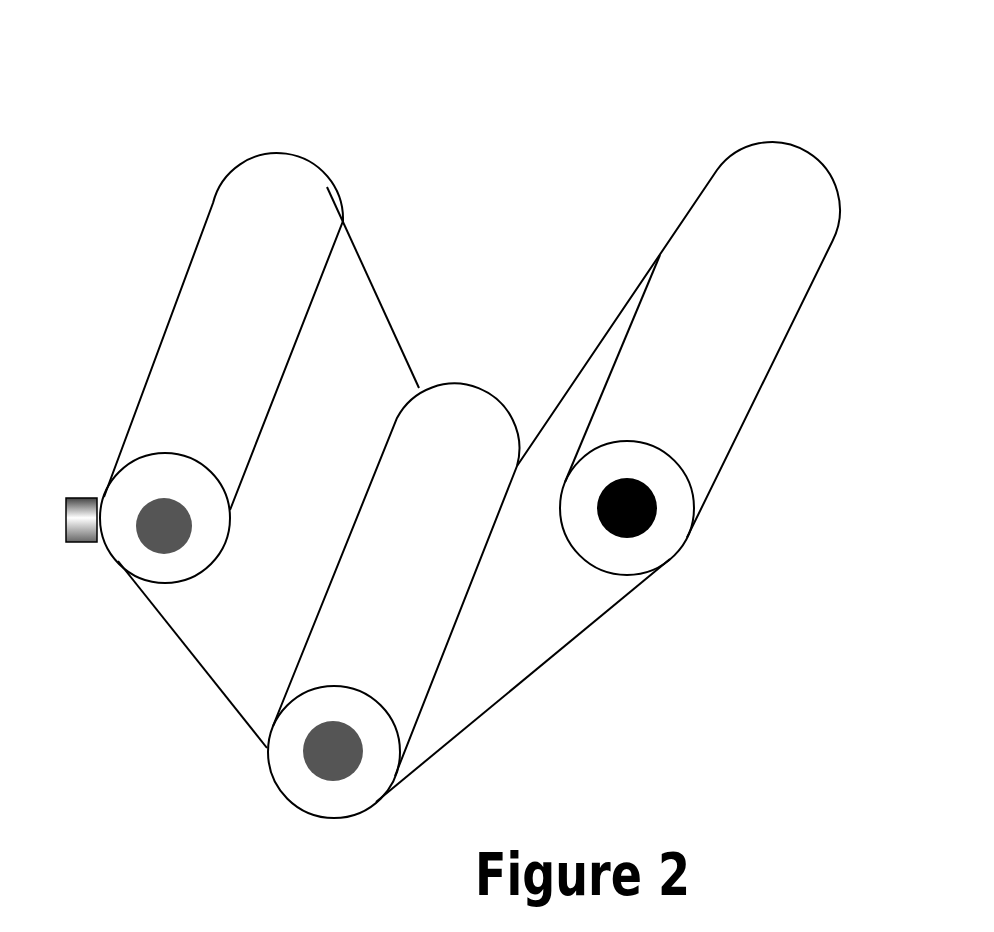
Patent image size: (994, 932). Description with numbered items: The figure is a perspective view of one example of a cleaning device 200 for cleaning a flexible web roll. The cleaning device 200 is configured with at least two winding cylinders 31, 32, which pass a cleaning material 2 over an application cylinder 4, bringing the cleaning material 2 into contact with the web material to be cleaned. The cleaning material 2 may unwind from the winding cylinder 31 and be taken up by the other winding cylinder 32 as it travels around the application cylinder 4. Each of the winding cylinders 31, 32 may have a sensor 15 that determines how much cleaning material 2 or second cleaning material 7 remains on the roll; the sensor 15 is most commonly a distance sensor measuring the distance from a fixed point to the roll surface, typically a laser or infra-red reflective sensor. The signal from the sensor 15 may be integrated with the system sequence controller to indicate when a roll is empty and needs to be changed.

The cleaning device 200 is at (471, 411).
The winding cylinder 31 is at (100, 468).
The winding cylinder 32 is at (698, 530).
The application cylinder 4 is at (340, 712).
The sensor 15 is at (95, 545).
The cleaning material 2 is at (202, 678).
The second cleaning material 7 is at (471, 476).